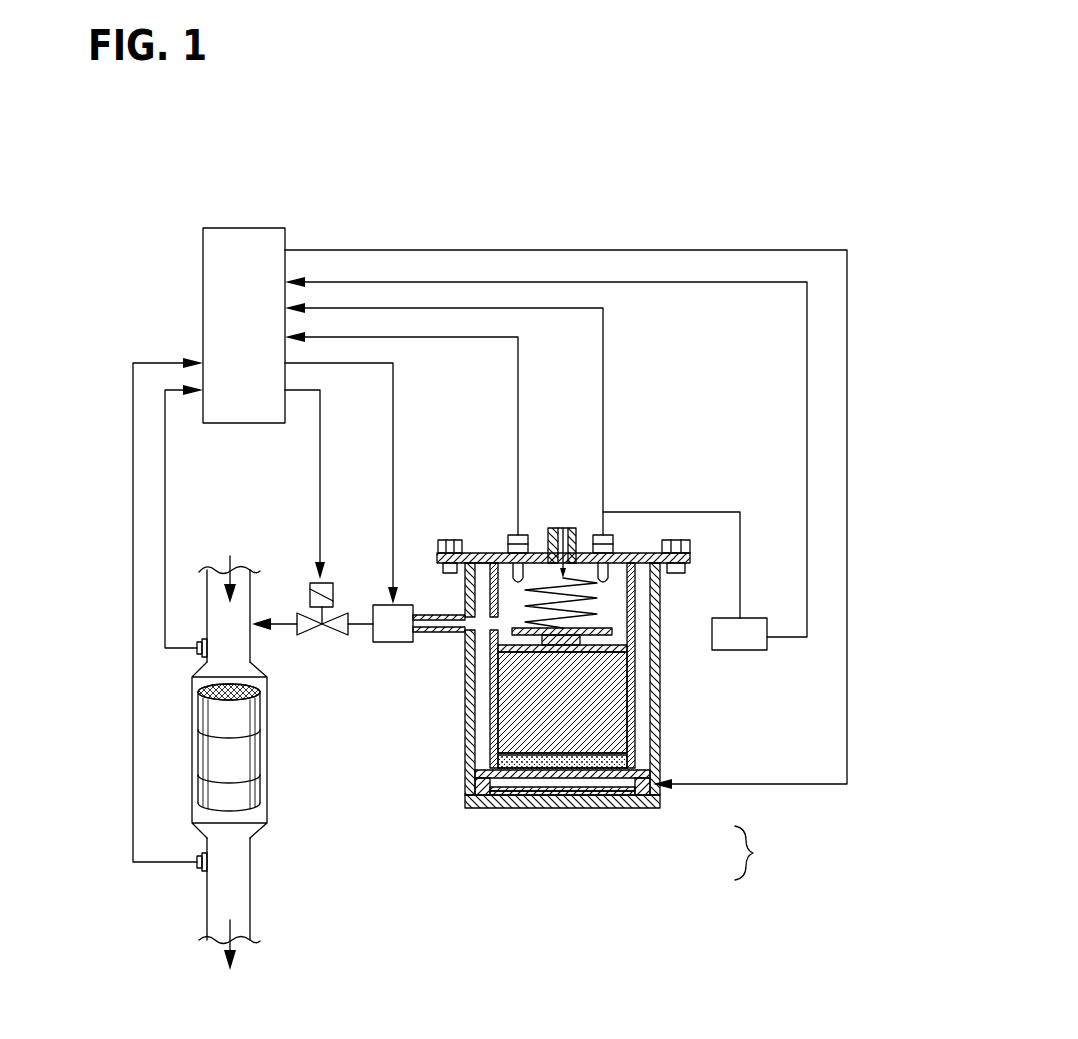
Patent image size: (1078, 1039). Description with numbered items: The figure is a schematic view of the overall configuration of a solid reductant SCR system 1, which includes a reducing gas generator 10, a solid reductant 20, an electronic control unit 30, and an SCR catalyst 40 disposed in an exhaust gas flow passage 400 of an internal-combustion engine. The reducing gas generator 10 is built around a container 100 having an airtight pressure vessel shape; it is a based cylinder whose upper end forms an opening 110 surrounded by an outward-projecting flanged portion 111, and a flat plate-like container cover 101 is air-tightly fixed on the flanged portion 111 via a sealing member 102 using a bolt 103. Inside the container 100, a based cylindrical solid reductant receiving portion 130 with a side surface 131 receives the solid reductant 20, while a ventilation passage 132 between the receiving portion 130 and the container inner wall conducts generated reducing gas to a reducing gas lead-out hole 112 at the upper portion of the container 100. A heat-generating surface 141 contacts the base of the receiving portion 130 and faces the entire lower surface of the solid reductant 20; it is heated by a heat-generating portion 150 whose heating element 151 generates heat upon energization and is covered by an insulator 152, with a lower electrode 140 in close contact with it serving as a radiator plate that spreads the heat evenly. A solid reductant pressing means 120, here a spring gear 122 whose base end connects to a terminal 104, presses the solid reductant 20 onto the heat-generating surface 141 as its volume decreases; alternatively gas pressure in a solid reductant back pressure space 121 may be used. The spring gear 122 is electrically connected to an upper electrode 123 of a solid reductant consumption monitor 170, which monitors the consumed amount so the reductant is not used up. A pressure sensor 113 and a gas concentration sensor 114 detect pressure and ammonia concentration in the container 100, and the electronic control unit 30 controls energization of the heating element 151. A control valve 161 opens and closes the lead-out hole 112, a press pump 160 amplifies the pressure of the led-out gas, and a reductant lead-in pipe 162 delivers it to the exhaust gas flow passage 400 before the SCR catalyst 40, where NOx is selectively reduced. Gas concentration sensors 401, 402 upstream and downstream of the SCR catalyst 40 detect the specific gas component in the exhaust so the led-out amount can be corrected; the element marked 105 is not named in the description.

The solid reductant SCR system 1 is at (575, 195).
The reducing gas generator 10 is at (486, 822).
The solid reductant 20 is at (618, 699).
The electronic control unit (ECU) 30 is at (243, 232).
The SCR catalyst 40 is at (207, 752).
The container 100 is at (468, 722).
The container cover 101 is at (660, 545).
The sealing member 102 is at (478, 553).
The bolt 103 is at (452, 540).
The terminal 104 is at (584, 530).
The sensor pin 105 is at (576, 530).
The opening 110 is at (692, 552).
The flanged portion 111 is at (692, 563).
The reducing gas lead-out hole 112 is at (456, 633).
The pressure sensor 113 is at (524, 533).
The gas concentration sensor 114 is at (613, 535).
The solid reductant pressing means 120 is at (648, 594).
The solid reductant back pressure space 121 is at (613, 606).
The spring gear 122 is at (580, 618).
The upper electrode 123 is at (498, 648).
The solid reductant receiving portion 130 is at (650, 757).
The solid reductant receiving portion side surface 131 is at (525, 740).
The ventilation passage 132 is at (500, 762).
The lower electrode 140 is at (468, 800).
The heat-generating surface 141 is at (493, 774).
The heat-generating portion 150 is at (764, 853).
The heating element 151 is at (655, 800).
The insulator 152 is at (640, 808).
The press pump 160 is at (375, 604).
The control valve 161 is at (311, 583).
The reductant lead-in pipe 162 is at (286, 630).
The solid reductant consumption monitor 170 is at (782, 654).
The exhaust gas flow passage 400 is at (190, 588).
The gas concentration sensor (upstream) 401 is at (197, 647).
The gas concentration sensor (downstream) 402 is at (197, 860).